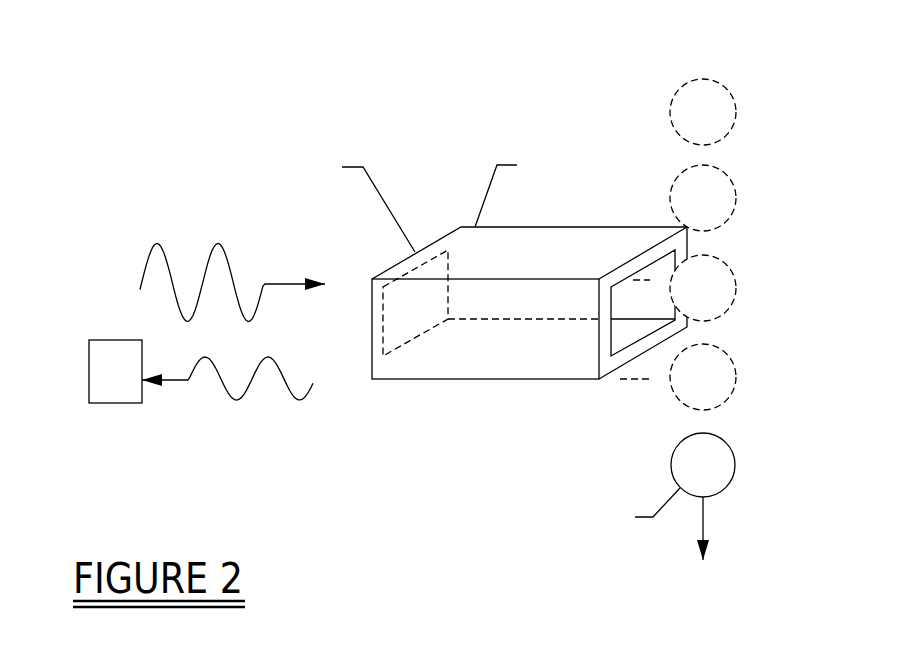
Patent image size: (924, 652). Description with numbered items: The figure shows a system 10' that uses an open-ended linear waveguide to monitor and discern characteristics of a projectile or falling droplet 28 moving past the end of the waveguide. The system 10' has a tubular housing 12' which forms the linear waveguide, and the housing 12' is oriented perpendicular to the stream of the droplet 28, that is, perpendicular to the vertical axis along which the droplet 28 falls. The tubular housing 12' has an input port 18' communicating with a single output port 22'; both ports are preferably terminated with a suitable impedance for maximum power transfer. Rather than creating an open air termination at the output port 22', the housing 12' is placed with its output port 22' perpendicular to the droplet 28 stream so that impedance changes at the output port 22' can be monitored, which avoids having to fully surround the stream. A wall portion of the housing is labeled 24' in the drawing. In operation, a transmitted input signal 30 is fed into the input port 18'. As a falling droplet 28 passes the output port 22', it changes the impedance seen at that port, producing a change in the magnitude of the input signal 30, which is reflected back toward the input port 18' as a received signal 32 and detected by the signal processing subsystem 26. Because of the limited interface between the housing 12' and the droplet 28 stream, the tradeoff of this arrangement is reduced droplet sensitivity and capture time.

The system 10' is at (128, 102).
The tubular housing 12' is at (524, 312).
The input port 18' is at (415, 261).
The output port 22' is at (713, 303).
The waveguide wall 24' is at (594, 342).
The signal processing subsystem 26 is at (88, 370).
The droplet 28 is at (683, 82).
The input signal 30 is at (233, 270).
The signal 32 is at (280, 365).